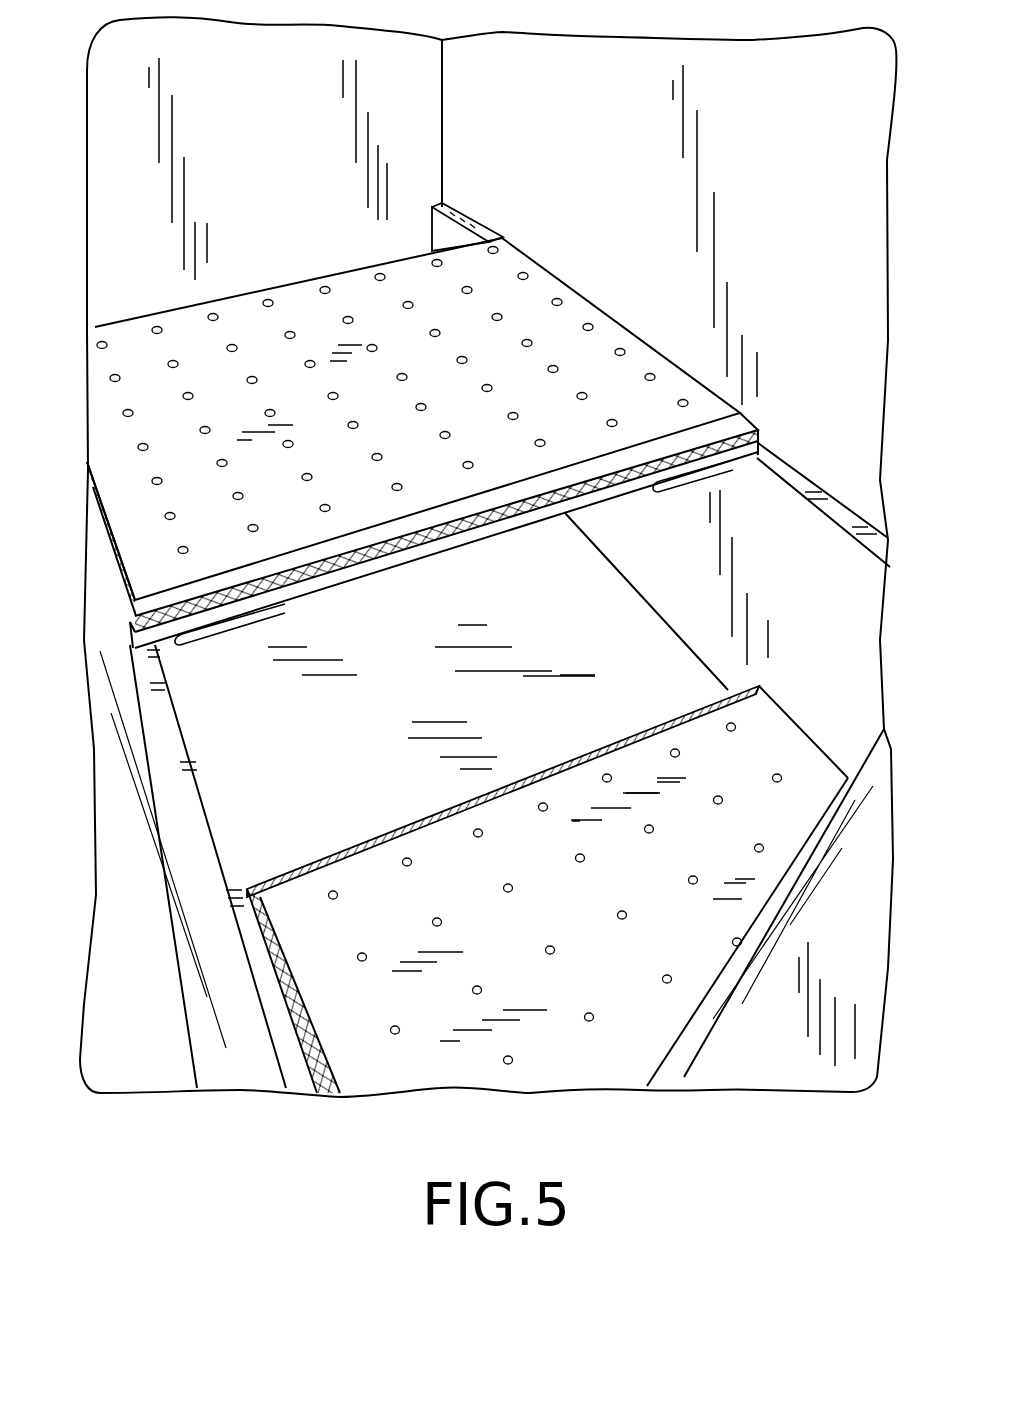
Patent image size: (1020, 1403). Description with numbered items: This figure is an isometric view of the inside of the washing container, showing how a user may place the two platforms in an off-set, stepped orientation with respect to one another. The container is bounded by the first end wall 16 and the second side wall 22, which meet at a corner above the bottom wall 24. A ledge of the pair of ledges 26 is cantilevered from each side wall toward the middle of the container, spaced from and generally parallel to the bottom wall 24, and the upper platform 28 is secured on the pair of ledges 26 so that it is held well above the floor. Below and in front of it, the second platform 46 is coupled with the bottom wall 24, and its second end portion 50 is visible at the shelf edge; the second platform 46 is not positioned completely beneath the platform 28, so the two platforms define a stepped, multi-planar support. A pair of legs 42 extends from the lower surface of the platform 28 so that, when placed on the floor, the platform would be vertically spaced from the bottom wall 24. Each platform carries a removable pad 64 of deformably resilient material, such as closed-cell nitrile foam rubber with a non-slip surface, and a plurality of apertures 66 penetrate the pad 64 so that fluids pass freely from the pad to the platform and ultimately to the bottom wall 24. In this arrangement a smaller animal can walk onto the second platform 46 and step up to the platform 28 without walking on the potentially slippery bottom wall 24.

The first end wall 16 is at (258, 190).
The second side wall 22 is at (591, 110).
The bottom wall 24 is at (317, 761).
The pair of ledges 26 is at (165, 713).
The platform 28 is at (298, 870).
The pair of legs 42 is at (663, 490).
The second platform 46 is at (365, 555).
The second end portion 50 is at (548, 540).
The pad 64 is at (450, 465).
The apertures 66 is at (399, 522).